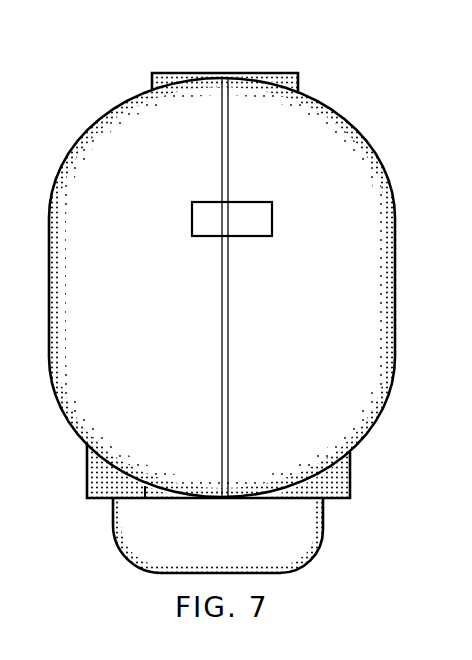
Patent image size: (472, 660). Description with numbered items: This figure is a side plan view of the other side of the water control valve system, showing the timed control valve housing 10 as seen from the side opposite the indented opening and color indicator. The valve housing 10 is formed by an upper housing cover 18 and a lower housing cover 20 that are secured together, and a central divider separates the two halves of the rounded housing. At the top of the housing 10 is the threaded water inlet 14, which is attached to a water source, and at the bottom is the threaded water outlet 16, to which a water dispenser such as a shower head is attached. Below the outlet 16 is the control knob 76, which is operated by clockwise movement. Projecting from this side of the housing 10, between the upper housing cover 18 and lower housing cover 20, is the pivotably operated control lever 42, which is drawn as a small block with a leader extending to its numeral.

The timed control valve housing 10 is at (222, 266).
The water inlet 14 is at (305, 64).
The water outlet 16 is at (322, 505).
The upper housing cover 18 is at (318, 192).
The lower housing cover 20 is at (158, 190).
The control lever 42 is at (272, 224).
The control knob 76 is at (290, 570).